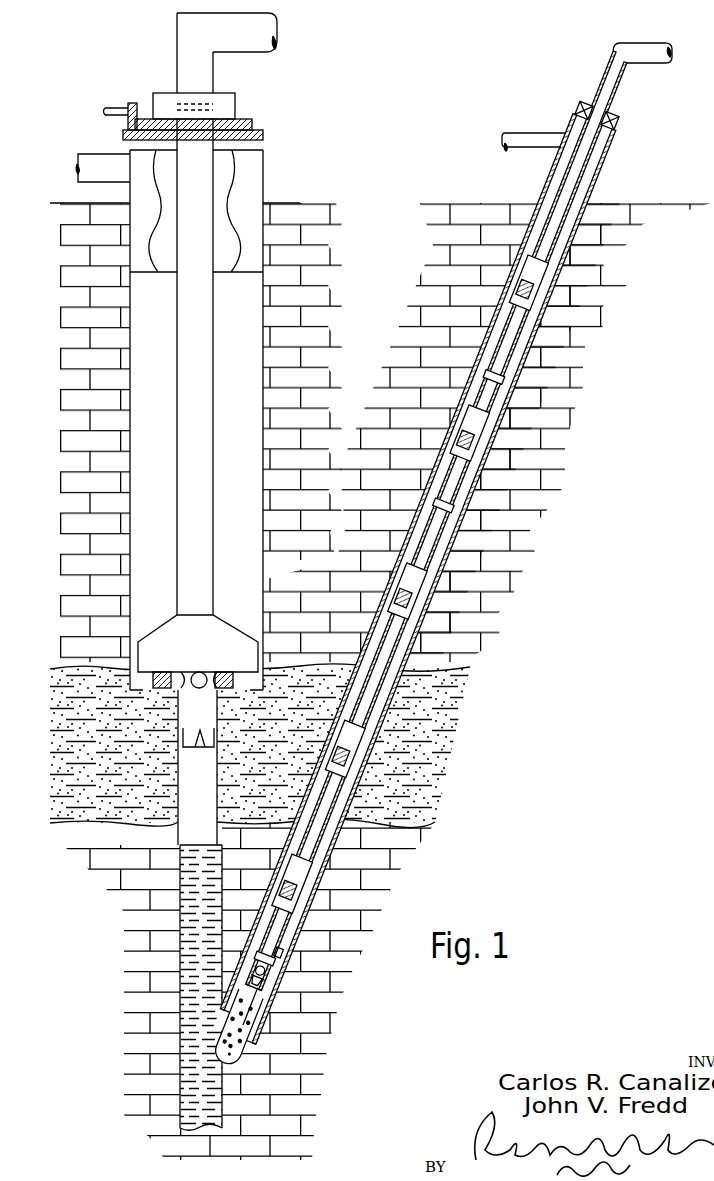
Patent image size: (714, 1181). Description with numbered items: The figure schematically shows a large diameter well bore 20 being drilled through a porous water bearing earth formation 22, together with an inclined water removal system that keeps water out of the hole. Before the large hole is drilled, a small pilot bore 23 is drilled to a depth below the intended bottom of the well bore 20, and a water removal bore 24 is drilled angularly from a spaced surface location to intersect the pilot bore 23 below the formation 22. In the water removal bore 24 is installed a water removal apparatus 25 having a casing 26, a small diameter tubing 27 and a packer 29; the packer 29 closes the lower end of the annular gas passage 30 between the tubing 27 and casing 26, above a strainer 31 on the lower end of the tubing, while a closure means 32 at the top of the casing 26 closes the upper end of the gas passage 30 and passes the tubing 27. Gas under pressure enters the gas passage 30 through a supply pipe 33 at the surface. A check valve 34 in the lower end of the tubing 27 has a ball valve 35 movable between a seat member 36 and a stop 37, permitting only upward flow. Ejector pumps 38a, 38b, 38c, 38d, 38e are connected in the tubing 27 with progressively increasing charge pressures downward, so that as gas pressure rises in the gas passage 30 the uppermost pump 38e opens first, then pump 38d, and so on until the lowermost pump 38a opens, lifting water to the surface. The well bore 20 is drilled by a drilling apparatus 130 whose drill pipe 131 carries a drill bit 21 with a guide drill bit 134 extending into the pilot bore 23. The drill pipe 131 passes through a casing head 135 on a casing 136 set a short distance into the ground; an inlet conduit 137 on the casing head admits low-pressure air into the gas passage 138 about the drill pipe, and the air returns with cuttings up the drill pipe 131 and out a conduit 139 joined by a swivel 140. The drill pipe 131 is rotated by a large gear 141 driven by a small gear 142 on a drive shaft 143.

The well bore 20 is at (262, 323).
The drill bit 21 is at (238, 632).
The water bearing earth formation 22 is at (75, 703).
The pilot bore 23 is at (218, 832).
The water removal bore 24 is at (583, 197).
The water removal apparatus 25 is at (574, 96).
The casing 26 is at (542, 177).
The tubing 27 is at (505, 378).
The packer 29 is at (280, 962).
The gas passage 30 is at (601, 151).
The strainer 31 is at (260, 1047).
The closure means 32 is at (623, 132).
The supply pipe 33 is at (522, 133).
The check valve 34 is at (273, 992).
The ball valve 35 is at (269, 980).
The seat member 36 is at (268, 1012).
The stop 37 is at (288, 946).
The ejector pump 38a is at (298, 882).
The ejector pump 38b is at (350, 745).
The ejector pump 38c is at (427, 600).
The ejector pump 38d is at (475, 432).
The ejector pump 38e is at (543, 283).
The drilling apparatus 130 is at (287, 189).
The drill pipe 131 is at (177, 432).
The guide drill bit 134 is at (190, 746).
The casing head 135 is at (252, 160).
The casing 136 is at (125, 217).
The inlet conduit 137 is at (97, 156).
The gas passage 138 is at (130, 311).
The conduit 139 is at (248, 53).
The swivel 140 is at (238, 101).
The large gear 141 is at (263, 125).
The small gear 142 is at (132, 104).
The drive shaft 143 is at (107, 108).